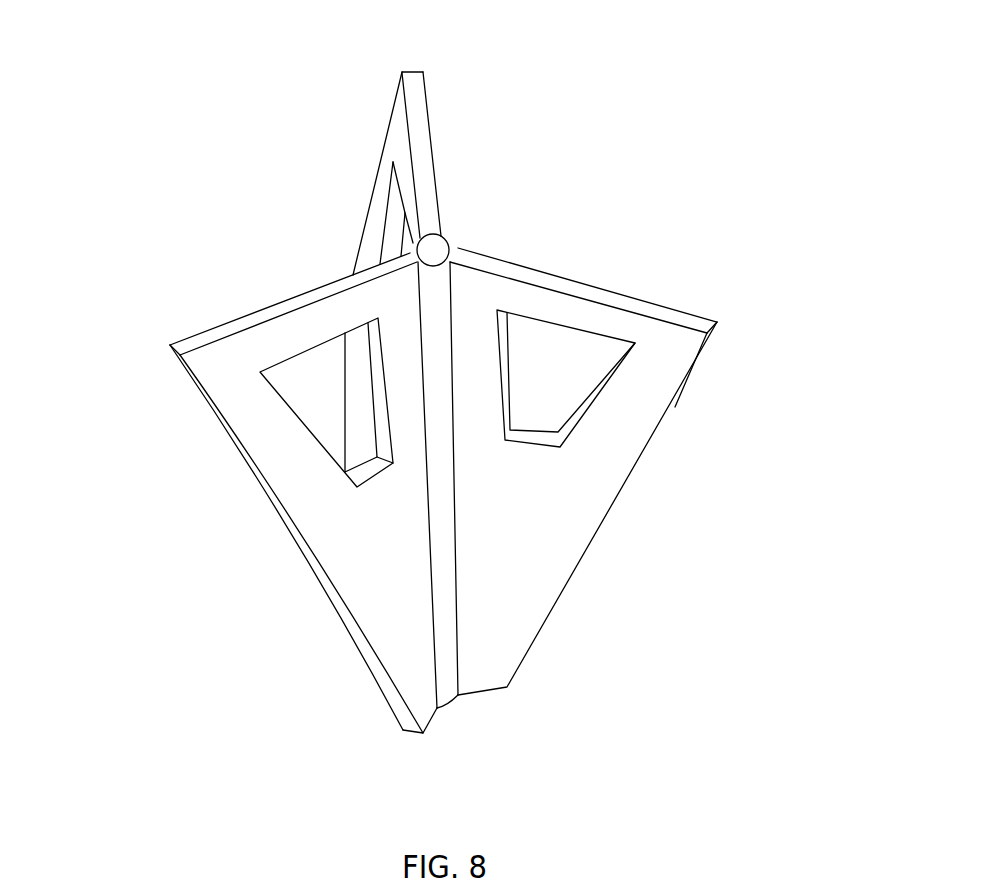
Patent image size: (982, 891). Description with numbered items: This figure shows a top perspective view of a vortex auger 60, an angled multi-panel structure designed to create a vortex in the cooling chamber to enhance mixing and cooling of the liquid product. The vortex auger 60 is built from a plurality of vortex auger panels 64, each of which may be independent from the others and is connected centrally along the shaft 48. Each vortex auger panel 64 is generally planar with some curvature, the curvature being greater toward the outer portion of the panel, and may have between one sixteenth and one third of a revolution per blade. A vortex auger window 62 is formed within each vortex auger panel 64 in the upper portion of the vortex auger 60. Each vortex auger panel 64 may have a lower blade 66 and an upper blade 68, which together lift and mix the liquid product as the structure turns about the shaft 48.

The vortex auger 60 is at (320, 193).
The shaft 48 is at (449, 243).
The vortex auger window 62 is at (553, 322).
The vortex auger panel 64 is at (663, 447).
The lower blade 66 is at (233, 436).
The upper blade 68 is at (227, 320).